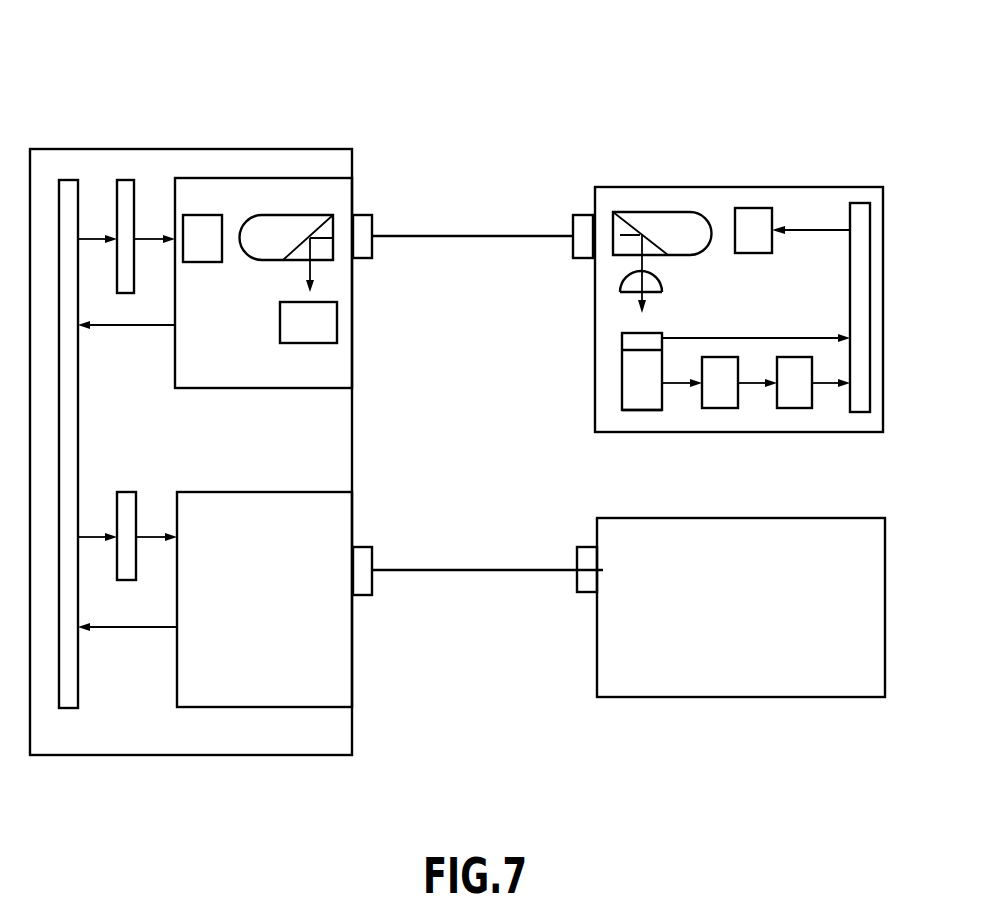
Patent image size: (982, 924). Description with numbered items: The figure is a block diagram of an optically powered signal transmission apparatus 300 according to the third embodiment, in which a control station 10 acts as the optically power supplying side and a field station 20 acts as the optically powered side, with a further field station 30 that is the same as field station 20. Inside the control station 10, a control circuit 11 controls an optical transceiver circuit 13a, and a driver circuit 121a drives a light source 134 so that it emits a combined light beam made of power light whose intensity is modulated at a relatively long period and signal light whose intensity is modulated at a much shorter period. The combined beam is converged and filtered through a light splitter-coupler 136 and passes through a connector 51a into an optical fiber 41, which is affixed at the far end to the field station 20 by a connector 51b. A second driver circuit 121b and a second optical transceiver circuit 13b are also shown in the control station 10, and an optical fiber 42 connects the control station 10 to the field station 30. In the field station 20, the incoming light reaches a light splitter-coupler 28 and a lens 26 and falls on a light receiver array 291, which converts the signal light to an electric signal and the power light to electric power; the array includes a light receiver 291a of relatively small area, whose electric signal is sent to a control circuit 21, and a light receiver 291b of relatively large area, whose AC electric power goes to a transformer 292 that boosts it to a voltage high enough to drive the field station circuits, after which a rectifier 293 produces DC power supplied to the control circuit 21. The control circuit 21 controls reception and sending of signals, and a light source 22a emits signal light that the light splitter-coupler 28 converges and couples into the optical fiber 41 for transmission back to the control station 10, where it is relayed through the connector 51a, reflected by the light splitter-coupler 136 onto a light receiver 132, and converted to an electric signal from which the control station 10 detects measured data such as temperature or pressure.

The optically powered signal transmission apparatus 300 is at (497, 58).
The control station 10 is at (333, 149).
The control circuit 11 is at (62, 180).
The driver circuit 121a is at (122, 180).
The driver circuit 121b is at (130, 492).
The optical transceiver circuit 13a is at (186, 178).
The optical transceiver circuit 13b is at (245, 492).
The light source 134 is at (210, 215).
The light splitter-coupler 136 is at (335, 212).
The light receiver 132 is at (337, 322).
The connector 51a is at (372, 252).
The connector 51b is at (573, 252).
The optical fiber 41 is at (455, 233).
The optical fiber 42 is at (457, 568).
The field station 20 is at (623, 187).
The light splitter-coupler 28 is at (653, 212).
The lens 26 is at (630, 293).
The light source 22a is at (752, 208).
The control circuit 21 is at (857, 203).
The light receiver array 291 is at (577, 407).
The light receiver 291a is at (622, 340).
The light receiver 291b is at (640, 410).
The transformer 292 is at (718, 408).
The rectifier 293 is at (798, 408).
The field station 30 is at (803, 518).